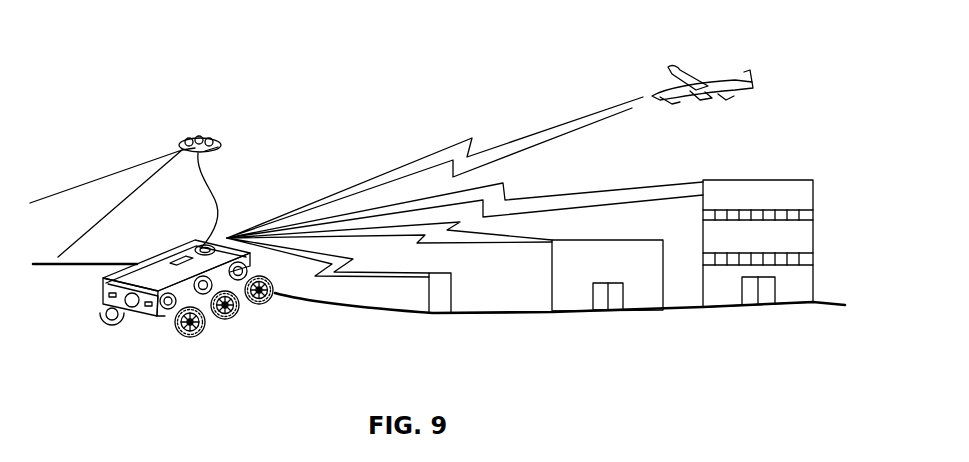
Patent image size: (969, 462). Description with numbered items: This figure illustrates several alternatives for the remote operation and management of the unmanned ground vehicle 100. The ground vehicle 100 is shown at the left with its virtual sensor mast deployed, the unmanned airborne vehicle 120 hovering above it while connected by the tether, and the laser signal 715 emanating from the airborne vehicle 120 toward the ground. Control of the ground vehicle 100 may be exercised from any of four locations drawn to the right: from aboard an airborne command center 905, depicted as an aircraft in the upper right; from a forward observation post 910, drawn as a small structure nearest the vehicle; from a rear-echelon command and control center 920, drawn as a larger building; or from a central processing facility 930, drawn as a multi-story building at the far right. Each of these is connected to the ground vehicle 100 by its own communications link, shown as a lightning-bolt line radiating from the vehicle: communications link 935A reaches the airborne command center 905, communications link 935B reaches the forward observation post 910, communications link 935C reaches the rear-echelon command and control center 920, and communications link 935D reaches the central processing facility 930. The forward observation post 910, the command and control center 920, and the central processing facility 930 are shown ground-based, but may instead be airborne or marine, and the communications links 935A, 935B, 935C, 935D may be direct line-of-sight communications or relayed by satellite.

The unmanned ground vehicle 100 is at (183, 340).
The unmanned airborne vehicle 120 is at (205, 134).
The laser signal 715 is at (137, 187).
The airborne command center 905 is at (681, 63).
The forward observation post 910 is at (438, 314).
The rear-echelon command and control center 920 is at (615, 310).
The central processing facility 930 is at (767, 306).
The communications link 935A is at (605, 110).
The communications link 935B is at (358, 273).
The communications link 935C is at (459, 247).
The communications link 935D is at (607, 185).